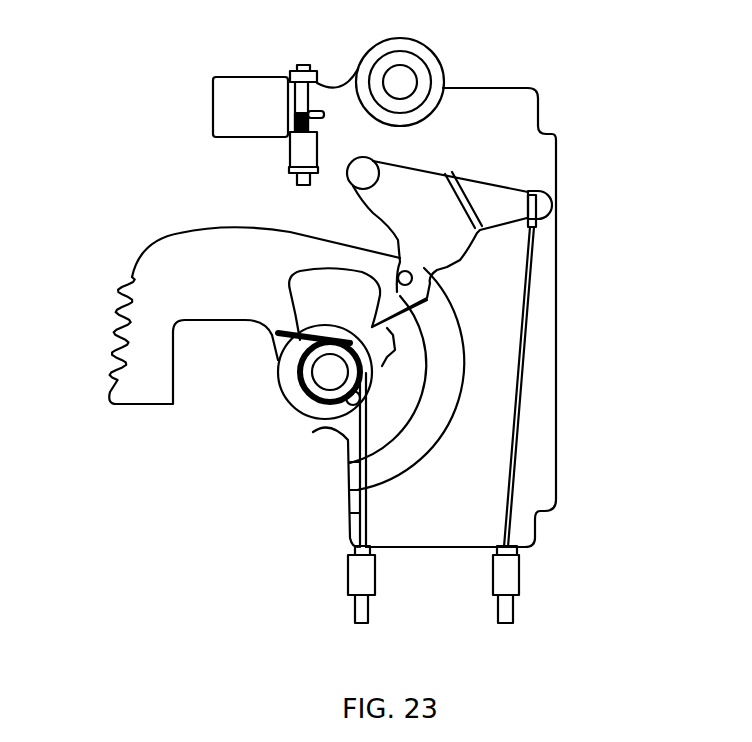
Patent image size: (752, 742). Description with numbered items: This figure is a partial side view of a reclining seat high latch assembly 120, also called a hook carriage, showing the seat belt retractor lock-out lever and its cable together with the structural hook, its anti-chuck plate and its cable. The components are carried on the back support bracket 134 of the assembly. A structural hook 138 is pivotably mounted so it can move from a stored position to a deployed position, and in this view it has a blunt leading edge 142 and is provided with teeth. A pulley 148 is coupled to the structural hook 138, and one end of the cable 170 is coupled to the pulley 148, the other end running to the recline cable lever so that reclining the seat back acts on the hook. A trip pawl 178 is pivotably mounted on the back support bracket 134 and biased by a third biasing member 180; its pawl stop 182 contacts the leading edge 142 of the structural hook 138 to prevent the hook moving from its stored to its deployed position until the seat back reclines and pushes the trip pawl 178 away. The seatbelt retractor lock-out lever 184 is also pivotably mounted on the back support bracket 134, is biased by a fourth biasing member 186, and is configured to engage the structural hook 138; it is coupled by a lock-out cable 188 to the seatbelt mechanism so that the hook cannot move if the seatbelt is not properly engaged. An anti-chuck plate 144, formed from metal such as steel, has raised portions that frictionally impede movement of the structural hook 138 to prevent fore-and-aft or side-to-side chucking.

The reclining seat high latch assembly 120 is at (544, 84).
The back support bracket 134 is at (547, 393).
The structural hook 138 is at (180, 233).
The leading edge 142 is at (150, 405).
The anti-chuck plate 144 is at (283, 370).
The pulley 148 is at (337, 407).
The cable 170 is at (350, 510).
The trip pawl 178 is at (250, 77).
The third biasing member 180 is at (322, 122).
The pawl stop 182 is at (288, 148).
The seatbelt retractor lock-out lever 184 is at (518, 190).
The fourth biasing member 186 is at (346, 186).
The lock-out cable 188 is at (515, 458).